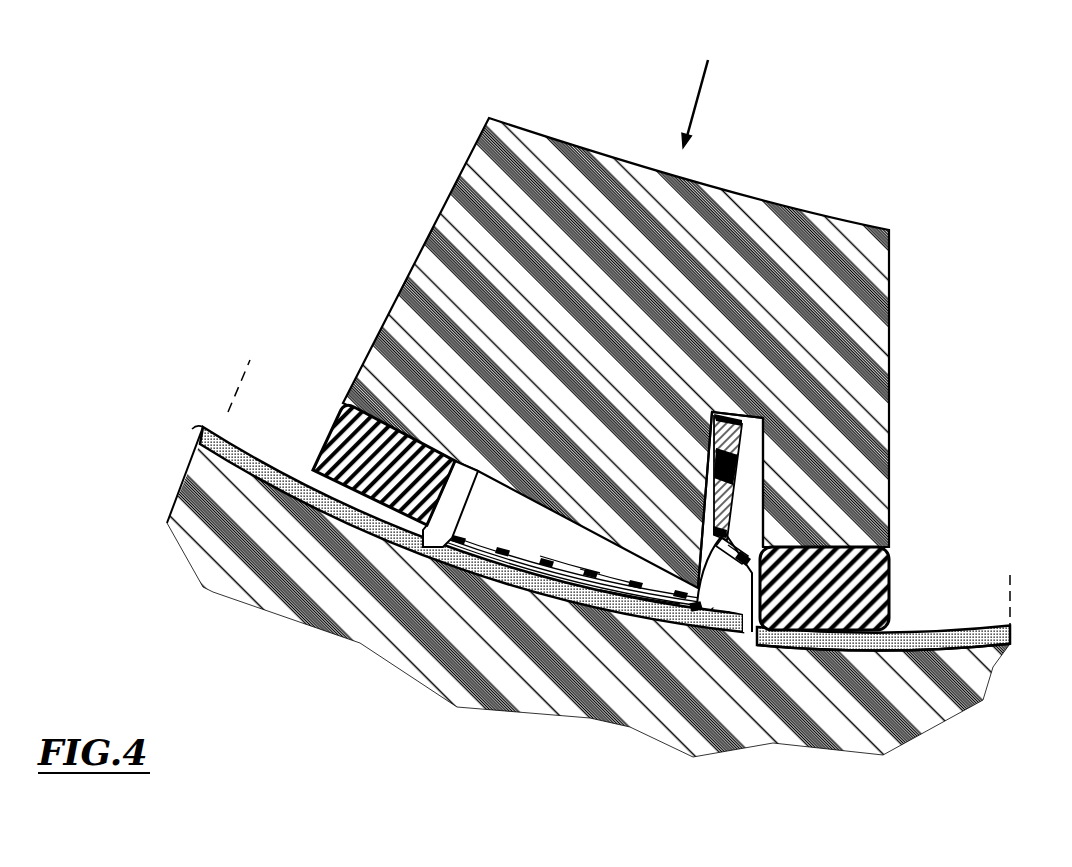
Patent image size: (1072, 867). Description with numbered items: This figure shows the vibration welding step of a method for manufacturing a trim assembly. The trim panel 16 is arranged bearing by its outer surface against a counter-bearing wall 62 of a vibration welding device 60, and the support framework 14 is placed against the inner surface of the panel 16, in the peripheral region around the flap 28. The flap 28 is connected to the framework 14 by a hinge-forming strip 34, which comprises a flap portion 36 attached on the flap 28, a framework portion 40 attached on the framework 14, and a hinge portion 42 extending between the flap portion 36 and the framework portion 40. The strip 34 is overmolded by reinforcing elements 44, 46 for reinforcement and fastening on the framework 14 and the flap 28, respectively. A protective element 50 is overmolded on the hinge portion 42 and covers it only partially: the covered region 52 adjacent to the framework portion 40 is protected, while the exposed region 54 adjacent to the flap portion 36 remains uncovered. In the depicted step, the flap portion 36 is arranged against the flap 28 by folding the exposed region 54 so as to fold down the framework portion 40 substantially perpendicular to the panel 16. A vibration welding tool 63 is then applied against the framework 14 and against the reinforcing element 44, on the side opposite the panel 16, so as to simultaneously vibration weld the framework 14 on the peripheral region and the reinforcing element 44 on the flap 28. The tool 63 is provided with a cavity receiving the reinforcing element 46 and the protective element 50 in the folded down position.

The support framework 14 is at (333, 452).
The trim panel 16 is at (974, 618).
The flap 28 is at (637, 600).
The hinge-forming strip 34 is at (545, 540).
The flap portion 36 is at (596, 592).
The framework portion 40 is at (762, 432).
The hinge portion 42 is at (752, 539).
The reinforcing element 44 is at (542, 552).
The reinforcing element 46 is at (746, 459).
The protective element 50 is at (744, 526).
The covered region 52 is at (697, 612).
The exposed region 54 is at (753, 634).
The vibration welding device 60 is at (331, 674).
The counter-bearing wall 62 is at (930, 640).
The vibration welding tool 63 is at (865, 247).